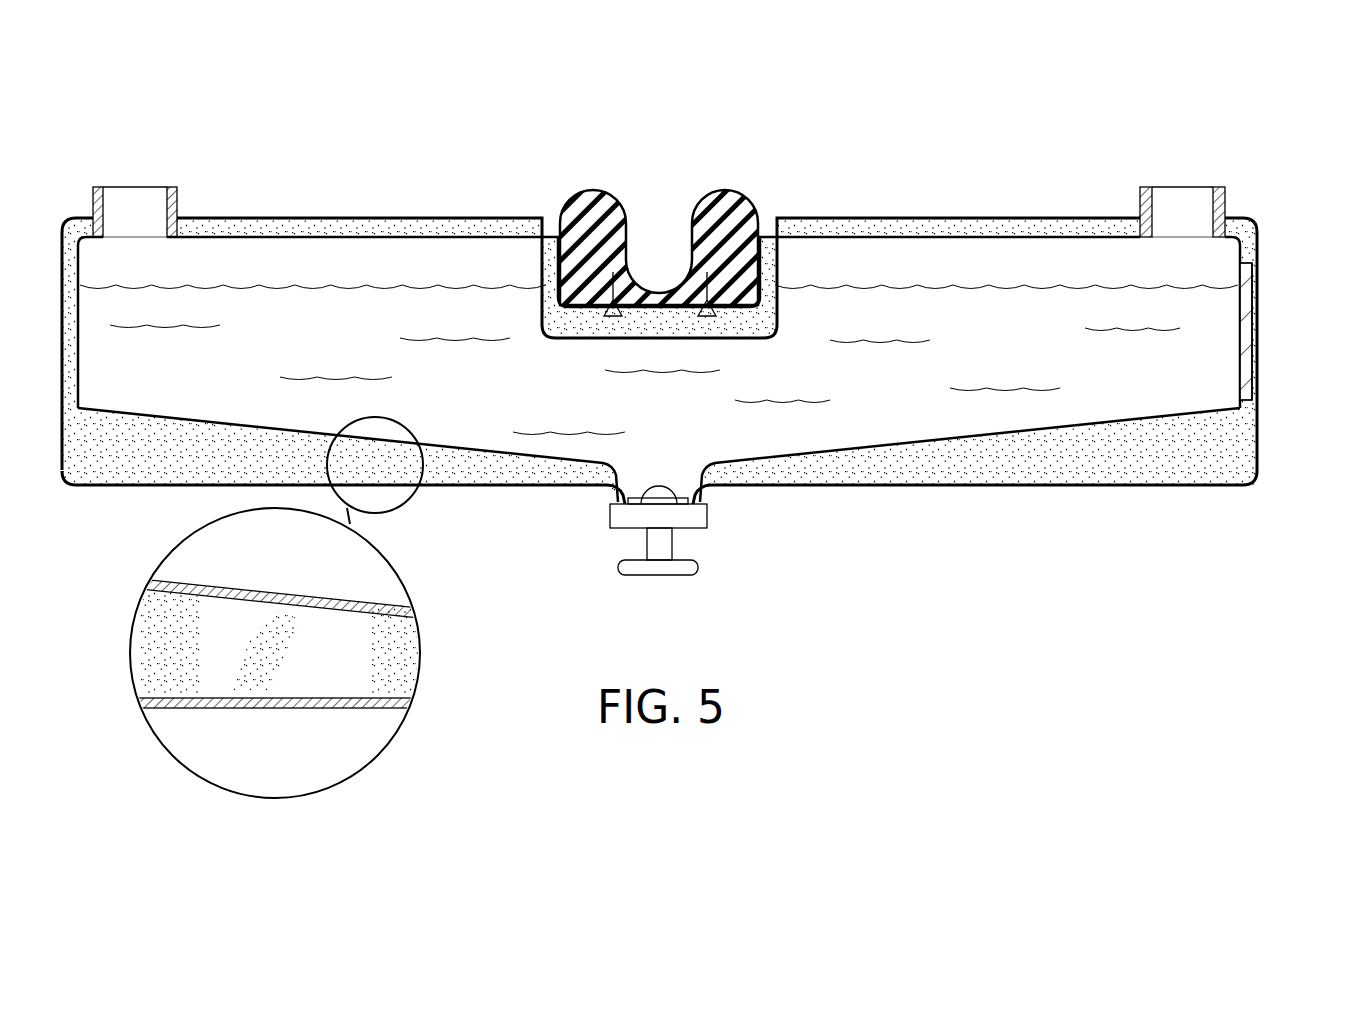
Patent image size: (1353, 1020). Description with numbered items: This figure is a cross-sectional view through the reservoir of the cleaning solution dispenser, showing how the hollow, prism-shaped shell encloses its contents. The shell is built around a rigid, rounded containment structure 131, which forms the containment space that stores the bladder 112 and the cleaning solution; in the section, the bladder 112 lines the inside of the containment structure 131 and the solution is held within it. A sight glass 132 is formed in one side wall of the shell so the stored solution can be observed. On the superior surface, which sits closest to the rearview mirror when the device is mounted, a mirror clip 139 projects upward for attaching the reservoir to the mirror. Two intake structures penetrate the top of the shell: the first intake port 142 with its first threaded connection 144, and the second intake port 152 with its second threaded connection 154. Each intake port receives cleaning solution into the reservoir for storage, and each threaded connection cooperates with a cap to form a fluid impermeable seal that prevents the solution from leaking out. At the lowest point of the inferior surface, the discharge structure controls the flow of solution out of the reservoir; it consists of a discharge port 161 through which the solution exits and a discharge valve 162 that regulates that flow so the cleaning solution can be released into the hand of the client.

The bladder 112 is at (1100, 424).
The containment structure 131 is at (1252, 233).
The sight glass 132 is at (1248, 328).
The mirror clip 139 is at (730, 227).
The first intake port 142 is at (130, 213).
The first threaded connection 144 is at (178, 200).
The second intake port 152 is at (1182, 208).
The second threaded connection 154 is at (1223, 205).
The discharge port 161 is at (703, 517).
The discharge valve 162 is at (670, 545).